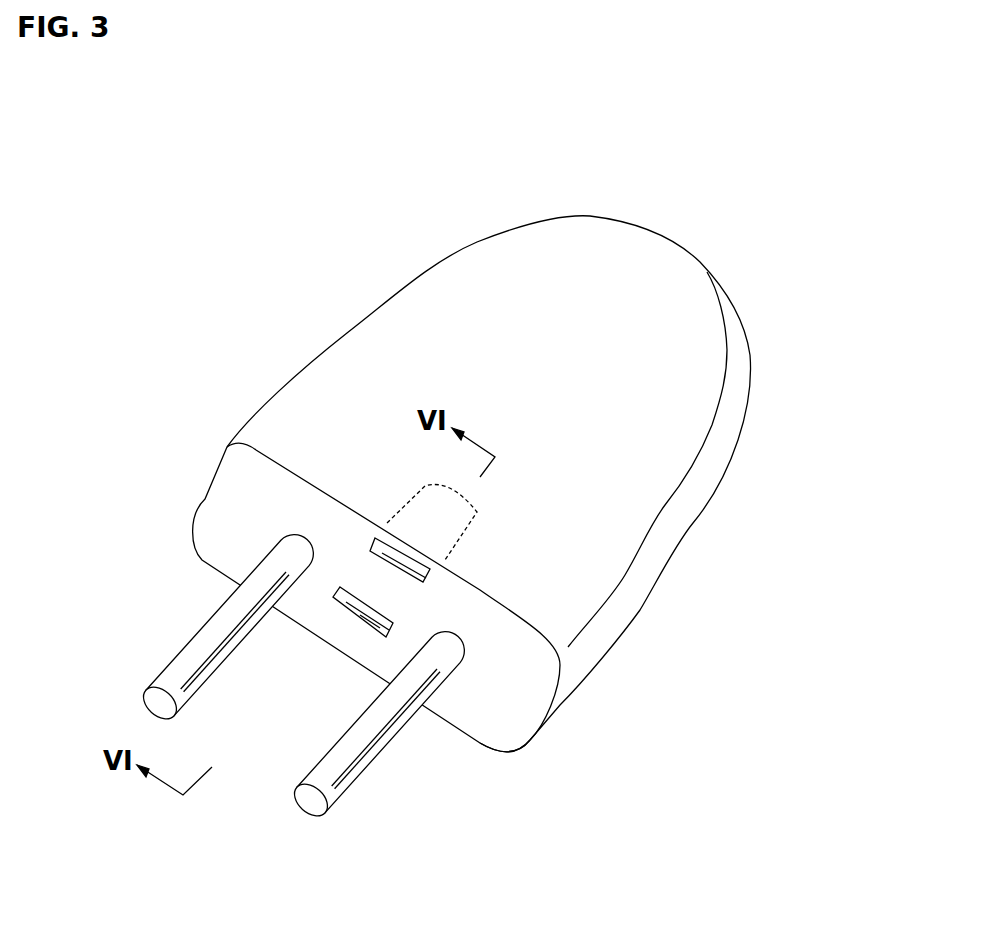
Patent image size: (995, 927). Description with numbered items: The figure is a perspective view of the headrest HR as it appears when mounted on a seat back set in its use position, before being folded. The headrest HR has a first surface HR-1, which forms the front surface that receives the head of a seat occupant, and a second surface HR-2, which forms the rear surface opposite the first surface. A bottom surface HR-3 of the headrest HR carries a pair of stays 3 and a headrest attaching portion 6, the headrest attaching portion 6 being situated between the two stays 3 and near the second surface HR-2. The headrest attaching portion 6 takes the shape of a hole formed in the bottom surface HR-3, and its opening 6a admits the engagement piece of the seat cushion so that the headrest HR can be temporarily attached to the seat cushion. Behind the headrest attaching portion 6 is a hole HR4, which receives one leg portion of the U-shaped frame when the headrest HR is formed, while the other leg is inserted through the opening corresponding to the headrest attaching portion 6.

The stay 3 is at (187, 637).
The headrest attaching portion 6 is at (456, 530).
The opening 6a is at (397, 562).
The headrest HR is at (697, 523).
The first surface HR-1 is at (640, 610).
The second surface HR-2 is at (680, 312).
The bottom surface HR-3 is at (513, 712).
The hole HR4 is at (377, 623).